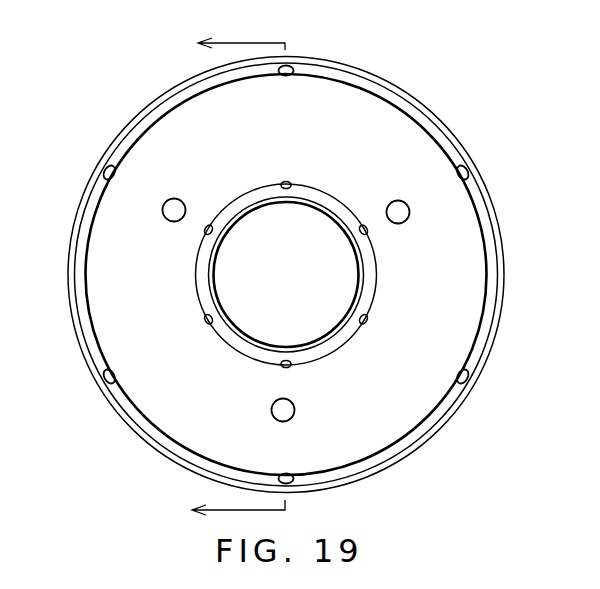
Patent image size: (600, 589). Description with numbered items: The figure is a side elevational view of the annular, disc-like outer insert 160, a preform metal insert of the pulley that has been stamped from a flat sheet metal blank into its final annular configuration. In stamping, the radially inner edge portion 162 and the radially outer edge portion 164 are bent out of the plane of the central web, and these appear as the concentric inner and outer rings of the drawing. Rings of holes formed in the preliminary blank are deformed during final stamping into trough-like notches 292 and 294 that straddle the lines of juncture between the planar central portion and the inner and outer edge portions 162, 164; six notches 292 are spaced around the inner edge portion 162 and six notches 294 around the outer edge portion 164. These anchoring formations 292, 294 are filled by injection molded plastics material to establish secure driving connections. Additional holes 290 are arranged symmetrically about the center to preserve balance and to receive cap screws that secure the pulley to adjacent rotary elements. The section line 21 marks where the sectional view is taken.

The outer insert 160 is at (289, 272).
The inner edge portion 162 is at (331, 196).
The outer edge portion 164 is at (346, 63).
The holes 290 is at (176, 203).
The notches 292 is at (288, 182).
The notches 294 is at (289, 66).
The section line 21- 21 is at (234, 277).